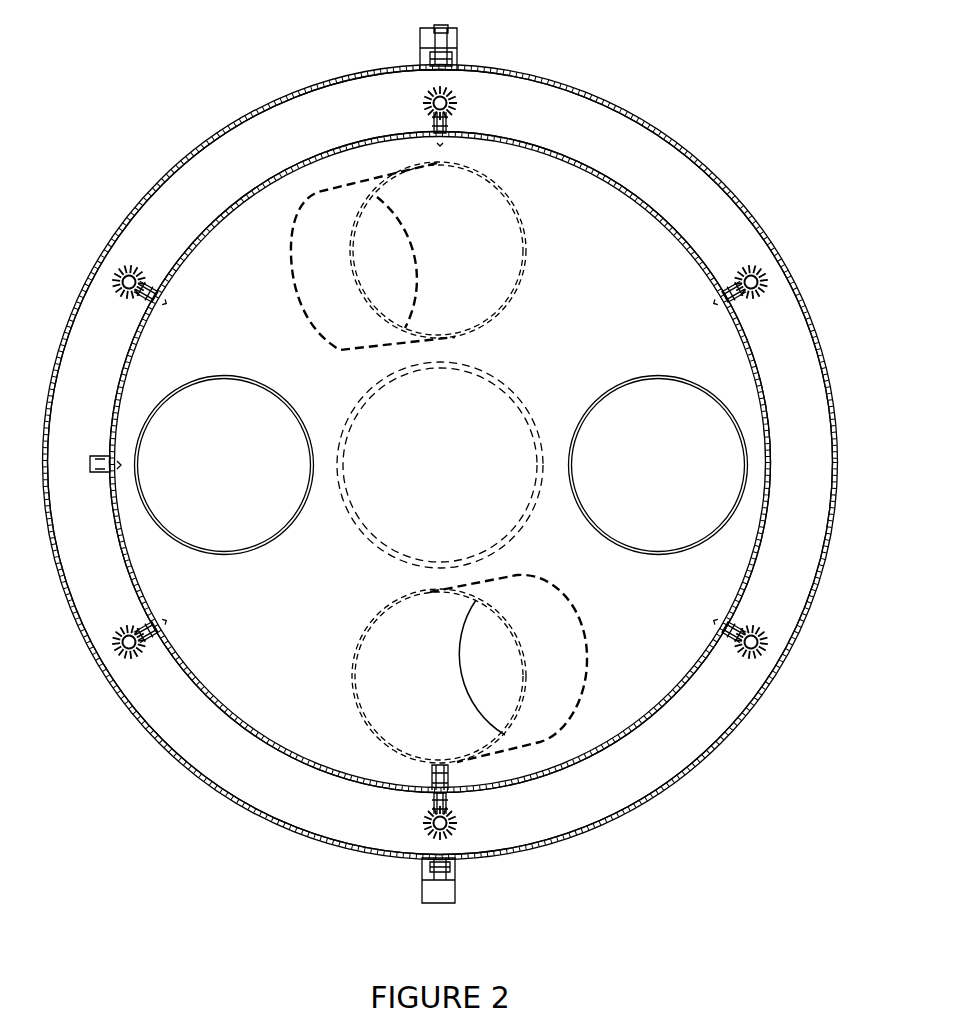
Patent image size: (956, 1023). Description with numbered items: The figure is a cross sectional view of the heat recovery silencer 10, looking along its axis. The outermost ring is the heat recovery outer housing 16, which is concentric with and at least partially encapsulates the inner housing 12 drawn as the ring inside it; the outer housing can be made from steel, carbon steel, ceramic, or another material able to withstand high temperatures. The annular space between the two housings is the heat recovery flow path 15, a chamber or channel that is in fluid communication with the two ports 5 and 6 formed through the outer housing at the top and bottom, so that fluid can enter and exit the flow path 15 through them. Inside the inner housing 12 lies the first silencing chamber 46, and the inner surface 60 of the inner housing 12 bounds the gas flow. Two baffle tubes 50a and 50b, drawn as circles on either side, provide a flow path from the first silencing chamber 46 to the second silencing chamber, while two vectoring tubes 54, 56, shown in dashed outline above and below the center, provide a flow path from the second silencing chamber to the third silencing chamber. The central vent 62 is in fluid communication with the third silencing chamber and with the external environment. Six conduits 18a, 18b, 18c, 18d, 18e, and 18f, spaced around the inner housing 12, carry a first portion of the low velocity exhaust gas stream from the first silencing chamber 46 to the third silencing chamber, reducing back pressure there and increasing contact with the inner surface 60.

The port 5 is at (420, 42).
The port 6 is at (422, 890).
The heat recovery silencer 10 is at (148, 868).
The inner housing 12 is at (298, 160).
The heat recovery flow path 15 is at (673, 170).
The heat recovery outer housing 16 is at (684, 774).
The conduit 18a is at (449, 104).
The conduit 18b is at (766, 283).
The conduit 18c is at (763, 650).
The conduit 18d is at (452, 829).
The conduit 18e is at (118, 648).
The conduit 18f is at (115, 280).
The first silencing chamber 46 is at (226, 260).
The baffle tube 50a is at (243, 554).
The baffle tube 50b is at (640, 552).
The vectoring tube 54 is at (352, 668).
The vectoring tube 56 is at (527, 258).
The inner surface 60 is at (703, 266).
The vent 62 is at (513, 392).